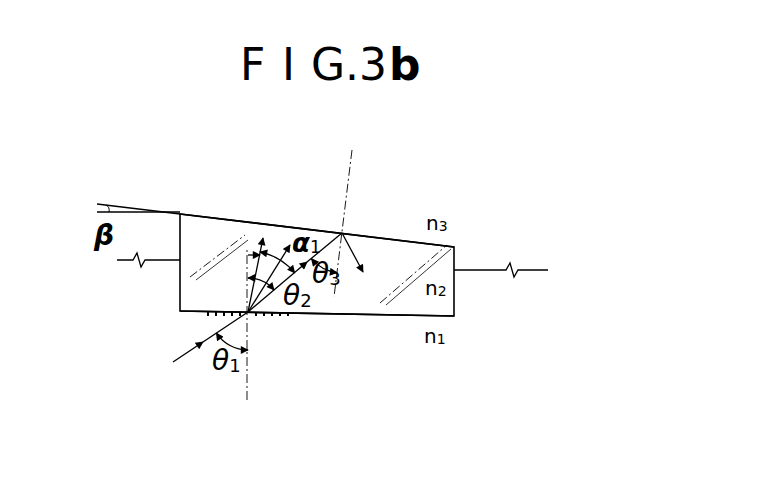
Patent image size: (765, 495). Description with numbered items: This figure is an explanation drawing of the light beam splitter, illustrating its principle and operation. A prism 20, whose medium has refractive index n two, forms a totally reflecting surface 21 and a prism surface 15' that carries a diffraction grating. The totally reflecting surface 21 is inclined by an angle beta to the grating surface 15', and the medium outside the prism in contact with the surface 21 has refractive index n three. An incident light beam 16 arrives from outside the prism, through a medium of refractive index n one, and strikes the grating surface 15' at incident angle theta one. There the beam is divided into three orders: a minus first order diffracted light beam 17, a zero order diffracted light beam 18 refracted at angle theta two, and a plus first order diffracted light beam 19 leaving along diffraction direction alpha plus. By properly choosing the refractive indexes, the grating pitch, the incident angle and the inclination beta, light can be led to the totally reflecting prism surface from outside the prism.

The prism surface having a diffracting grating 15' is at (317, 340).
The incident light beam 16 is at (192, 357).
The minus first order diffracted light beam 17 is at (258, 247).
The zero order diffracted light beam 18 is at (281, 251).
The plus first order diffracted light beam 19 is at (317, 231).
The prism 20 is at (445, 292).
The totally reflecting surface 21 is at (453, 245).